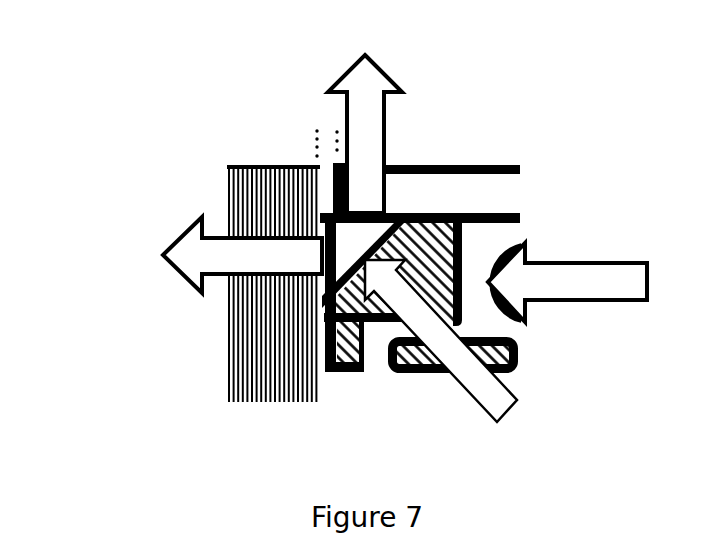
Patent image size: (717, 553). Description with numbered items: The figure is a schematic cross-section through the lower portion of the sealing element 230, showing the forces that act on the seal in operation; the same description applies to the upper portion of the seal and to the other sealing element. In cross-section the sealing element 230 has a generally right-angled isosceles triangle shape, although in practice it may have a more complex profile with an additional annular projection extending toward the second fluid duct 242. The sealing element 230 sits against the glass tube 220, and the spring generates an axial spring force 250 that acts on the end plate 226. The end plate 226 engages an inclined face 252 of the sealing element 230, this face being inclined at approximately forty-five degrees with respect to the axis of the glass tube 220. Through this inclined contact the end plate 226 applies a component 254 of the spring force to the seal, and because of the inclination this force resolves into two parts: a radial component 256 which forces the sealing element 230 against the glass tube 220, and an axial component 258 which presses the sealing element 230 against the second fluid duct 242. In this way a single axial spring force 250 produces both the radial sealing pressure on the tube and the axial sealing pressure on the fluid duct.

The glass tube 220 is at (492, 192).
The end plate 226 is at (462, 242).
The sealing element 230 is at (372, 322).
The second fluid duct 242 is at (247, 345).
The axial spring force 250 is at (610, 294).
The inclined face 252 is at (377, 213).
The component of the spring force 254 is at (477, 382).
The radial component 256 is at (362, 145).
The axial component 258 is at (173, 262).